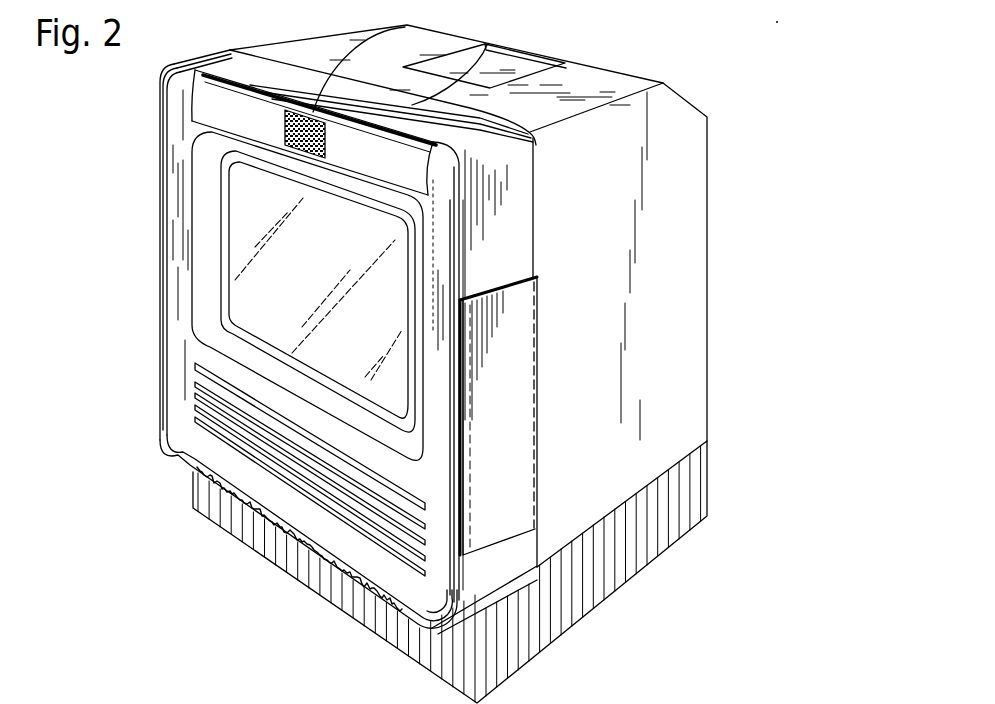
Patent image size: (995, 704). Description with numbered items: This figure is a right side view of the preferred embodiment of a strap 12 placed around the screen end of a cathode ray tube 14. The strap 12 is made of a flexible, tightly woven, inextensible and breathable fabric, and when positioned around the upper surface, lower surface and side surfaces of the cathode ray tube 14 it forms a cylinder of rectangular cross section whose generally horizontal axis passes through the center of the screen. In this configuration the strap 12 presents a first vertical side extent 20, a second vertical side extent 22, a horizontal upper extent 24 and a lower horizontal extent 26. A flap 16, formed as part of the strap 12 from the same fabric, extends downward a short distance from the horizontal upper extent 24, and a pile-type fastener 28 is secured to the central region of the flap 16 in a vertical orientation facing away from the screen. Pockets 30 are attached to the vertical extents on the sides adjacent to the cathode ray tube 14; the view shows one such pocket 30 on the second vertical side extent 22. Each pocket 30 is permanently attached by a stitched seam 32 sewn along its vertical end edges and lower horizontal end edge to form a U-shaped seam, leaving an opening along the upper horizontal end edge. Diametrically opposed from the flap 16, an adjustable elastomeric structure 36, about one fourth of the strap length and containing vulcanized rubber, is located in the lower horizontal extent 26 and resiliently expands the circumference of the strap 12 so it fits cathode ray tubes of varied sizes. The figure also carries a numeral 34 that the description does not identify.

The strap 12 is at (237, 65).
The cathode ray tube 14 is at (255, 232).
The flap 16 is at (203, 100).
The first vertical side extent 20 is at (163, 183).
The second vertical side extent 22 is at (510, 214).
The horizontal upper extent 24 is at (486, 47).
The lower horizontal extent 26 is at (190, 463).
The pile-type fastener 28 is at (400, 27).
The pockets 30 is at (513, 342).
The stitched seam 32 is at (534, 372).
The panel top edge 34 is at (513, 280).
The elastomeric structure 36 is at (267, 520).